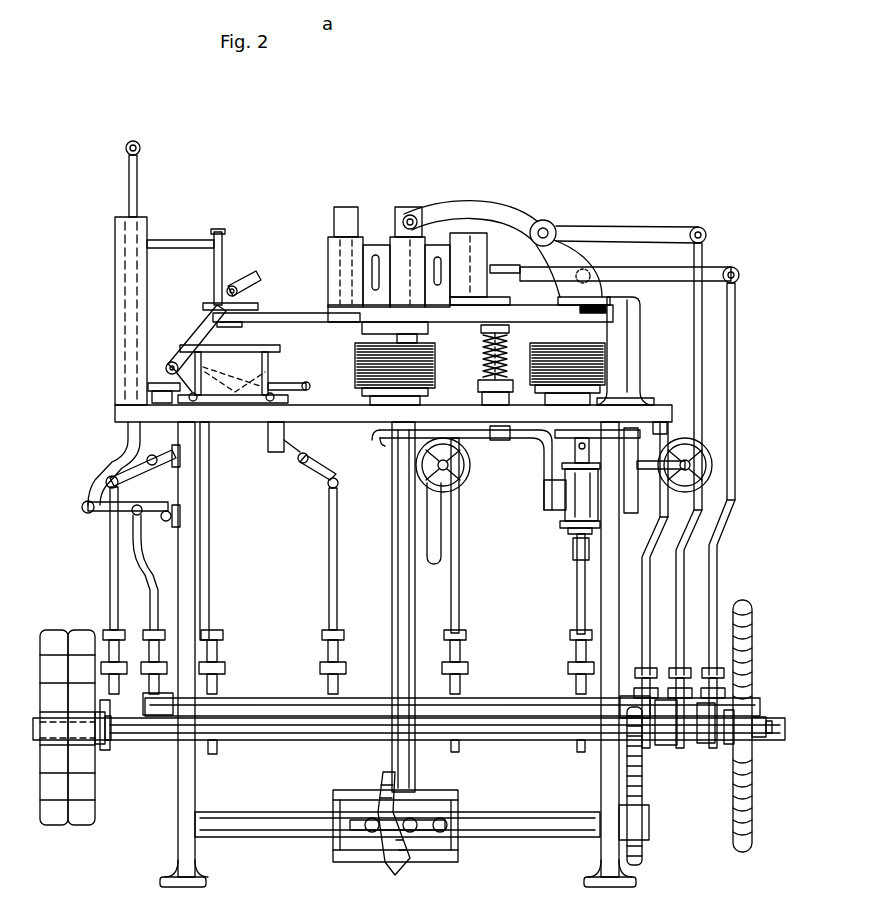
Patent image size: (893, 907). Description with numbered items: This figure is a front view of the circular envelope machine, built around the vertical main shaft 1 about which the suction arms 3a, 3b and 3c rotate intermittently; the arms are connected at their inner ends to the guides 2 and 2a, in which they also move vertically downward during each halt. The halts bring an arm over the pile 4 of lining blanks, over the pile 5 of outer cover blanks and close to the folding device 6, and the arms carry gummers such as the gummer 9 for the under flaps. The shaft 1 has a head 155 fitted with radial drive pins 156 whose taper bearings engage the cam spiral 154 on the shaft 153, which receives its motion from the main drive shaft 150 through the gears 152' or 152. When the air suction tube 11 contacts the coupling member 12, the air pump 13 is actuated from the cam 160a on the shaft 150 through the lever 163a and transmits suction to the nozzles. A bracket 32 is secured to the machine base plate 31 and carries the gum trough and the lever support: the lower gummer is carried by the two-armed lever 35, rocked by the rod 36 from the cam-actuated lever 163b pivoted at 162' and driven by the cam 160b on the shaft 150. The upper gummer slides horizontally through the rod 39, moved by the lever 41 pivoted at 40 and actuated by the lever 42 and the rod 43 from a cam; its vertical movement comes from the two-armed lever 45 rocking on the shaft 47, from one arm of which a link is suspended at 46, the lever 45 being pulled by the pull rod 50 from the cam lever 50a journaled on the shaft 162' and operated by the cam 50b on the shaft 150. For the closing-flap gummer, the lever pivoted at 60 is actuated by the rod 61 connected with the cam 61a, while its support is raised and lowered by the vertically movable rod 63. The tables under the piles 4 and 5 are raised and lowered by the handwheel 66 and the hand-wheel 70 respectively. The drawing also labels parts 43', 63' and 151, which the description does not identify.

The vertical main shaft 1 is at (403, 623).
The guide 2 is at (408, 270).
The guide 2a is at (334, 226).
The suction arm 3a is at (596, 311).
The suction arm 3b is at (418, 327).
The suction arm 3c is at (340, 320).
The pile of lining blanks 4 is at (605, 368).
The pile of outer cover blanks 5 is at (355, 366).
The folding device 6 is at (252, 375).
The gummer 9 is at (606, 315).
The air suction tube 11 is at (485, 330).
The coupling member 12 is at (510, 347).
The air pump 13 is at (575, 506).
The machine base plate 31 is at (115, 412).
The bracket 32 is at (642, 333).
The two-armed lever 35 is at (664, 283).
The rod 36 is at (733, 410).
The rod 39 is at (240, 283).
The pivot 40 is at (172, 362).
The lever 41 is at (196, 332).
The lever 42 is at (234, 374).
The rod 43 is at (225, 558).
The tube lower end 43' is at (217, 772).
The two-armed lever 45 is at (628, 238).
The suspension point 46 is at (413, 215).
The shaft 47 is at (543, 220).
The pull rod 50 is at (698, 336).
The cam lever 50a is at (670, 670).
The cam 50b is at (646, 748).
The pivot 60 is at (688, 437).
The rod 61 is at (646, 548).
The cam 61a is at (688, 748).
The vertically movable rod 63 is at (471, 566).
The rod end 63' is at (474, 753).
The handwheel 66 is at (712, 470).
The hand-wheel 70 is at (470, 467).
The main drive shaft 150 is at (243, 742).
The wheel 151 is at (88, 800).
The gear 152 is at (652, 786).
The gear 152' is at (601, 754).
The shaft 153 is at (598, 838).
The cam spiral 154 is at (455, 845).
The head 155 is at (378, 845).
The radial drive pins 156 is at (442, 820).
The eccentric or cam 160a is at (577, 745).
The cam 160b is at (710, 746).
The shaft 162' is at (451, 679).
The lever 163a is at (572, 690).
The cam actuated lever 163b is at (750, 683).